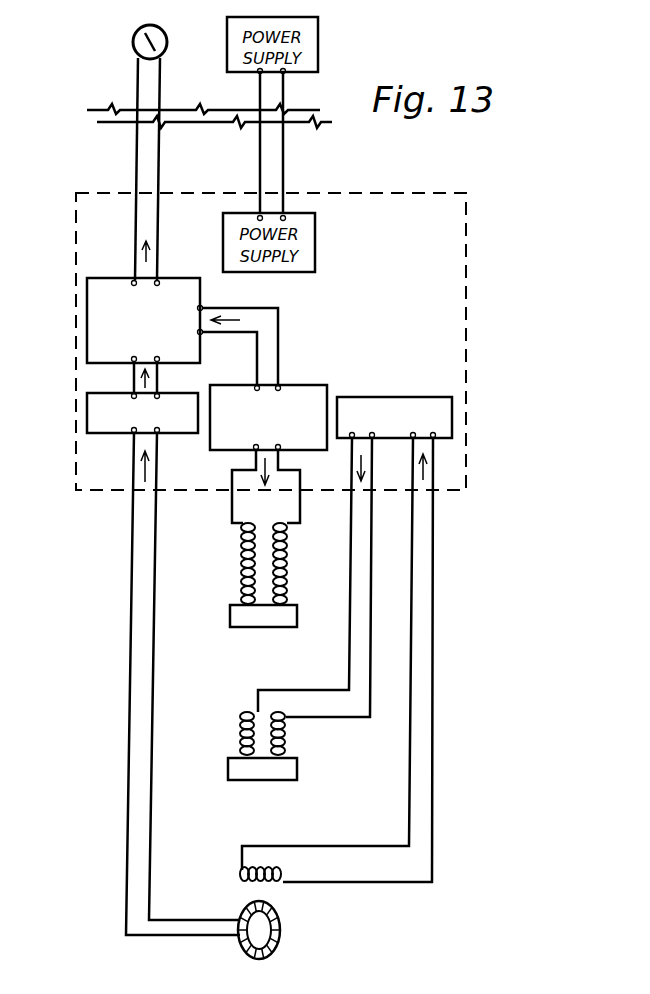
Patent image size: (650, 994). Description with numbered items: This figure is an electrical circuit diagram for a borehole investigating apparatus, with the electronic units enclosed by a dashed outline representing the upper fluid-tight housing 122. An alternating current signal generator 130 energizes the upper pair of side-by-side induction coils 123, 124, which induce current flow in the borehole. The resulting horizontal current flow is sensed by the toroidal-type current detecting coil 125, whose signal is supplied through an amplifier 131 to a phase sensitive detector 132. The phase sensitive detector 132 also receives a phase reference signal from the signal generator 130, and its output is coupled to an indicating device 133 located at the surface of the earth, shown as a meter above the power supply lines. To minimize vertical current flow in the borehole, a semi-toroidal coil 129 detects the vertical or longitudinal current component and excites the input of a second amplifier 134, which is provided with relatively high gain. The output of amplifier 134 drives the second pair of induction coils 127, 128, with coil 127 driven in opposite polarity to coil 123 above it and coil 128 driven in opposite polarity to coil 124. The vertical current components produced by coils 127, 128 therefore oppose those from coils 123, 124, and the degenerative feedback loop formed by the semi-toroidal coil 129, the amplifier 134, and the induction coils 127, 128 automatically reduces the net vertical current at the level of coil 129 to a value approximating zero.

The upper fluid-tight housing 122 is at (384, 196).
The induction coil 123 is at (242, 540).
The induction coil 124 is at (288, 560).
The toroidal-type current detecting coil 125 is at (283, 930).
The induction coil 127 is at (240, 730).
The induction coil 128 is at (286, 735).
The semi-toroidal coil 129 is at (278, 866).
The alternating current signal generator 130 is at (307, 383).
The amplifier 131 is at (100, 433).
The phase sensitive detector 132 is at (107, 278).
The indicating device 133 is at (133, 45).
The amplifier 134 is at (411, 397).